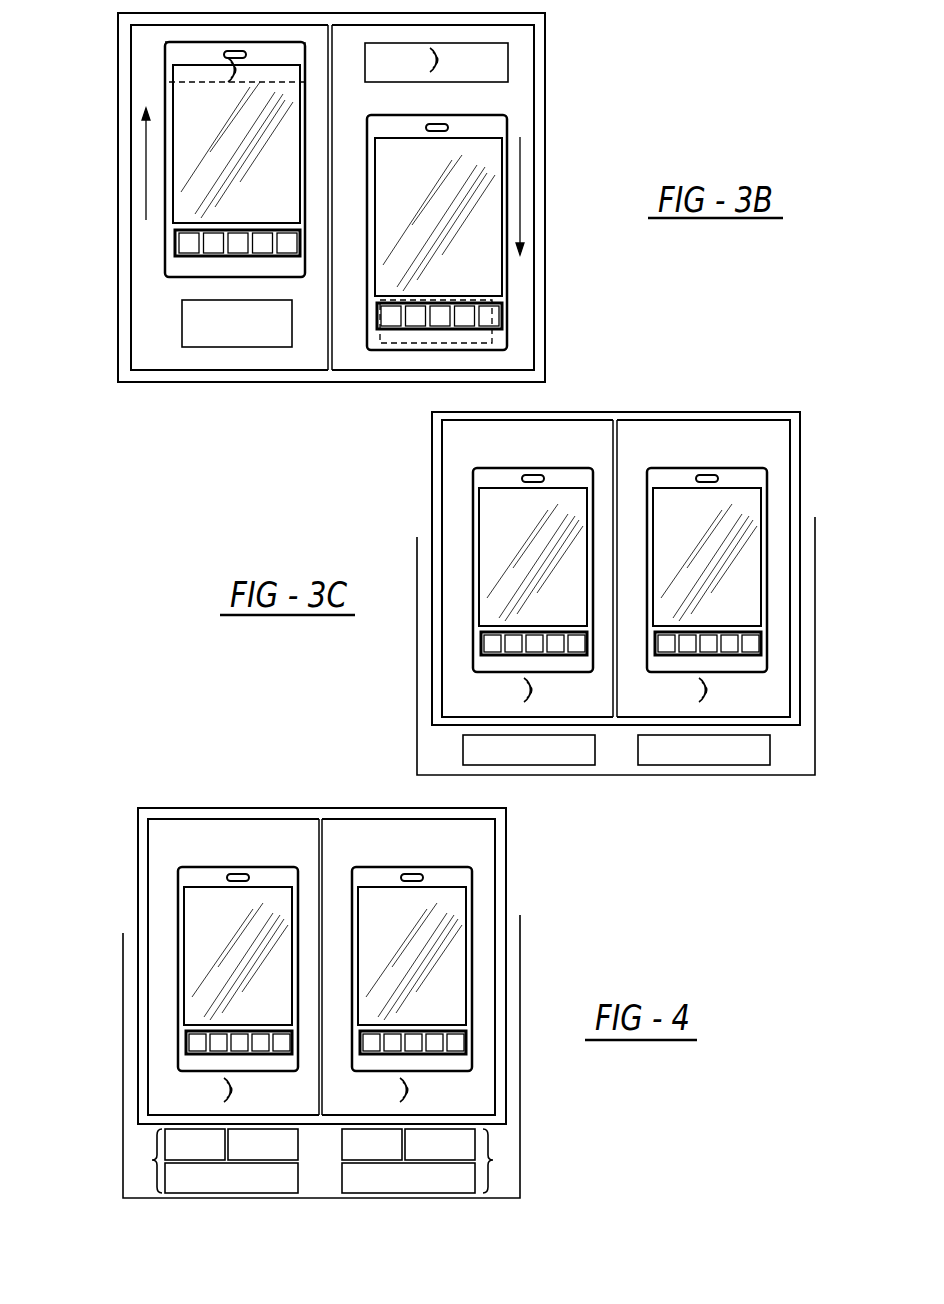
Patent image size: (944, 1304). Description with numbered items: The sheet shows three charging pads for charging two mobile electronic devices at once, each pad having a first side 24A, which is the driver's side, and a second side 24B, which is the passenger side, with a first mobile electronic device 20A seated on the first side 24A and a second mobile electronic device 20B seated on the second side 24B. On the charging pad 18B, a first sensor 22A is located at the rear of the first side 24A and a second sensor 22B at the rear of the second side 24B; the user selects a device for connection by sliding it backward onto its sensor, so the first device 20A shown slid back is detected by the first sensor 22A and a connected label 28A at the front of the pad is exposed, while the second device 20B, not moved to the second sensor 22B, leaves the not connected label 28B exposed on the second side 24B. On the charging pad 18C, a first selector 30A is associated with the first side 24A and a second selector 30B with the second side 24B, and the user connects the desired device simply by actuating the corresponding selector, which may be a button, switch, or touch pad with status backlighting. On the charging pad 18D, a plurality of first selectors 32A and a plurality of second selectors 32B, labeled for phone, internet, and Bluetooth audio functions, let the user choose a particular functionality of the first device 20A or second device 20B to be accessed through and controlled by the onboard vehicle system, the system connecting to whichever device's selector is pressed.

In FIG. 3B, the charging pad 18B is at (522, 63).
In FIG. 3C, the charging pad 18C is at (770, 435).
In FIG. 4, the charging pad 18D is at (178, 835).
In FIG. 3B, the first mobile electronic device 20A is at (183, 92).
In FIG. 3C, the first mobile electronic device 20A is at (483, 478).
In FIG. 4, the first mobile electronic device 20A is at (198, 877).
In FIG. 3B, the second mobile electronic device 20B is at (497, 125).
In FIG. 3C, the second mobile electronic device 20B is at (748, 478).
In FIG. 4, the second mobile electronic device 20B is at (462, 873).
In FIG. 3B, the first sensor 22A is at (228, 70).
In FIG. 3C, the first sensor 22A is at (521, 692).
In FIG. 4, the first sensor 22A is at (220, 1092).
In FIG. 3B, the second sensor 22B is at (437, 74).
In FIG. 3C, the second sensor 22B is at (717, 690).
In FIG. 4, the second sensor 22B is at (418, 1088).
In FIG. 3B, the first side 24A is at (143, 252).
In FIG. 3C, the first side 24A is at (558, 440).
In FIG. 4, the first side 24A is at (278, 830).
In FIG. 3B, the second side 24B is at (523, 285).
In FIG. 3C, the second side 24B is at (698, 445).
In FIG. 4, the second side 24B is at (400, 835).
In FIG. 3B, the connected label 28A is at (247, 347).
In FIG. 3B, the not connected label 28B is at (492, 50).
In FIG. 3C, the first selector 30A is at (565, 765).
In FIG. 3C, the second selector 30B is at (715, 765).
In FIG. 4, the first selectors 32A is at (153, 1158).
In FIG. 4, the second selectors 32B is at (493, 1155).